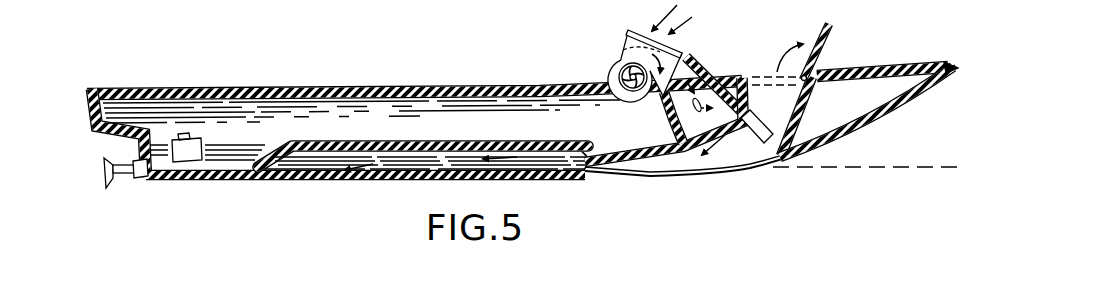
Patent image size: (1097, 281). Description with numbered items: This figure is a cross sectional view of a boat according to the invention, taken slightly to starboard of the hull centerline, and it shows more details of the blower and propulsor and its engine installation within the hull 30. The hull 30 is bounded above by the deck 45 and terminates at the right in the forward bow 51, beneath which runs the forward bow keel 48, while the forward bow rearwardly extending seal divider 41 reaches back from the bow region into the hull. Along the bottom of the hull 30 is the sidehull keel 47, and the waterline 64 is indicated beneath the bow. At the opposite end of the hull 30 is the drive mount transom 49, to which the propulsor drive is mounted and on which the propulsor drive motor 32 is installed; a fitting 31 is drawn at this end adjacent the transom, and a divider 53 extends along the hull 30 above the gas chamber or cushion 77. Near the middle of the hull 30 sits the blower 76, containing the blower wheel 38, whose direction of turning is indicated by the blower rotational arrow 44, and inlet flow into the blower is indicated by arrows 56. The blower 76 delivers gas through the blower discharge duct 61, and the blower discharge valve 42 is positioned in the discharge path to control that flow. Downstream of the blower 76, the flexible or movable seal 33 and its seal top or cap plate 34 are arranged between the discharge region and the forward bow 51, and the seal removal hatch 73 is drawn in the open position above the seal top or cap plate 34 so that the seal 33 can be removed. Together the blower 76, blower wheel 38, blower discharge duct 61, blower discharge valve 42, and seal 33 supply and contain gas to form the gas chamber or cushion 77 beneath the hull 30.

The hull 30 is at (487, 102).
The anchor fitting 31 is at (122, 175).
The propulsor drive motor 32 is at (187, 147).
The flexible or movable seal 33 is at (757, 146).
The seal top or cap plate 34 is at (780, 113).
The blower wheel 38 is at (628, 68).
The forward bow rearwardly extending seal divider 41 is at (673, 163).
The blower discharge valve 42 is at (683, 110).
The blower rotational arrow 44 is at (685, 52).
The deck 45 is at (414, 86).
The sidehull keel 47 is at (682, 180).
The forward bow keel 48 is at (903, 113).
The drive mount transom 49 is at (135, 145).
The forward bow 51 is at (851, 144).
The divider 53 is at (383, 170).
The air inlet flow 56 is at (690, 22).
The blower discharge duct 61 is at (697, 70).
The waterline 64 is at (918, 168).
The seal removal hatch 73 is at (832, 44).
The blower 76 is at (617, 78).
The gas chamber or cushion 77 is at (557, 168).